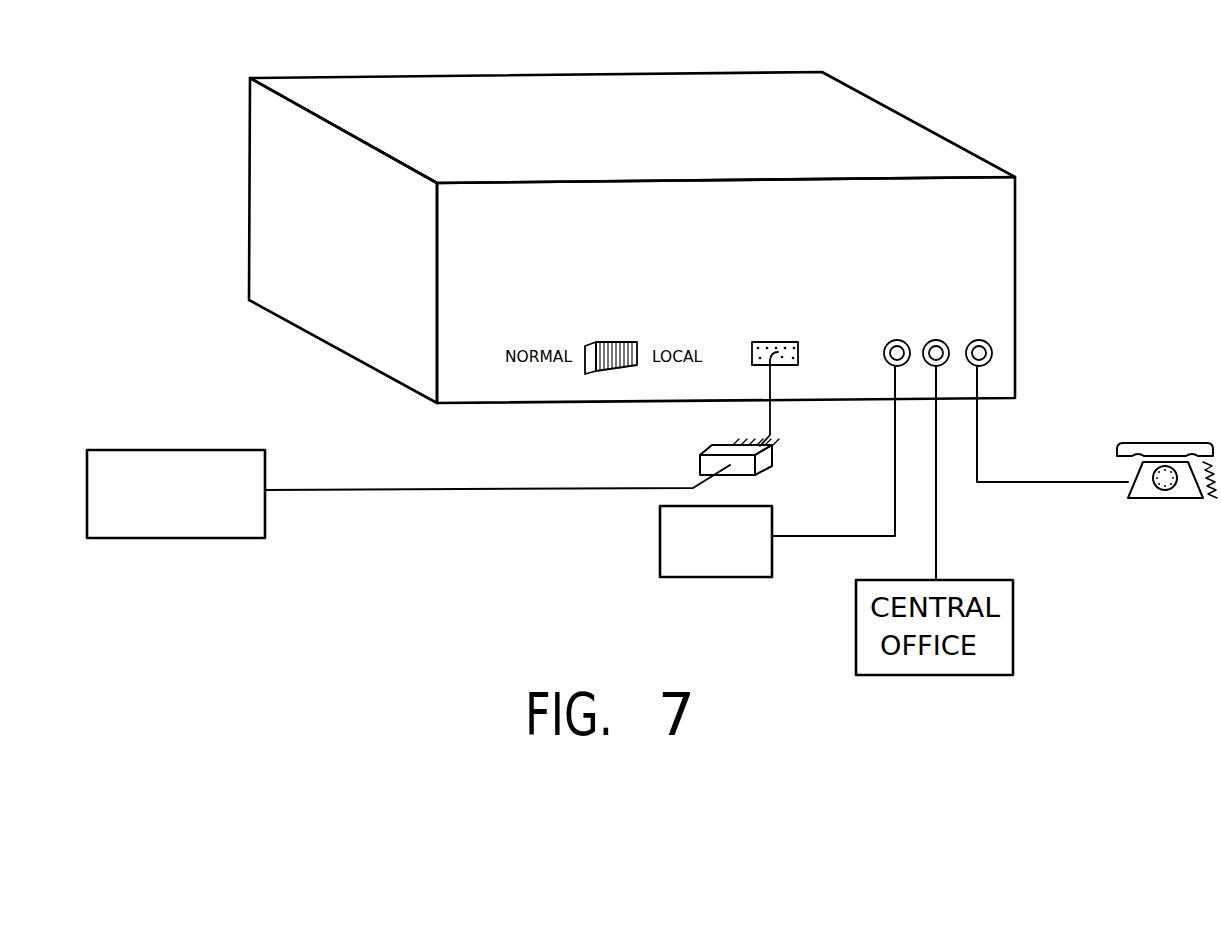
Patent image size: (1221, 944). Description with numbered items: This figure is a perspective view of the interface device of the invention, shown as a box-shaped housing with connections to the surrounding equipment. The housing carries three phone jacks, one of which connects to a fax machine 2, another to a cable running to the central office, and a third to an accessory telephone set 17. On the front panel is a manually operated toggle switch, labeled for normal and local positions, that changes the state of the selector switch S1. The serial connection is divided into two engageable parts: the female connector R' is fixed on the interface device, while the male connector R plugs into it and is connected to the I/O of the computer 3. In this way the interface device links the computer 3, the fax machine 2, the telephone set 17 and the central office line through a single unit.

The selector switch S1 is at (610, 344).
The female RS-232C R' is at (775, 365).
The male RS-232C R is at (722, 457).
The computer 3 is at (257, 522).
The fax machine 2 is at (727, 577).
The accessory telephone set 17 is at (1155, 440).